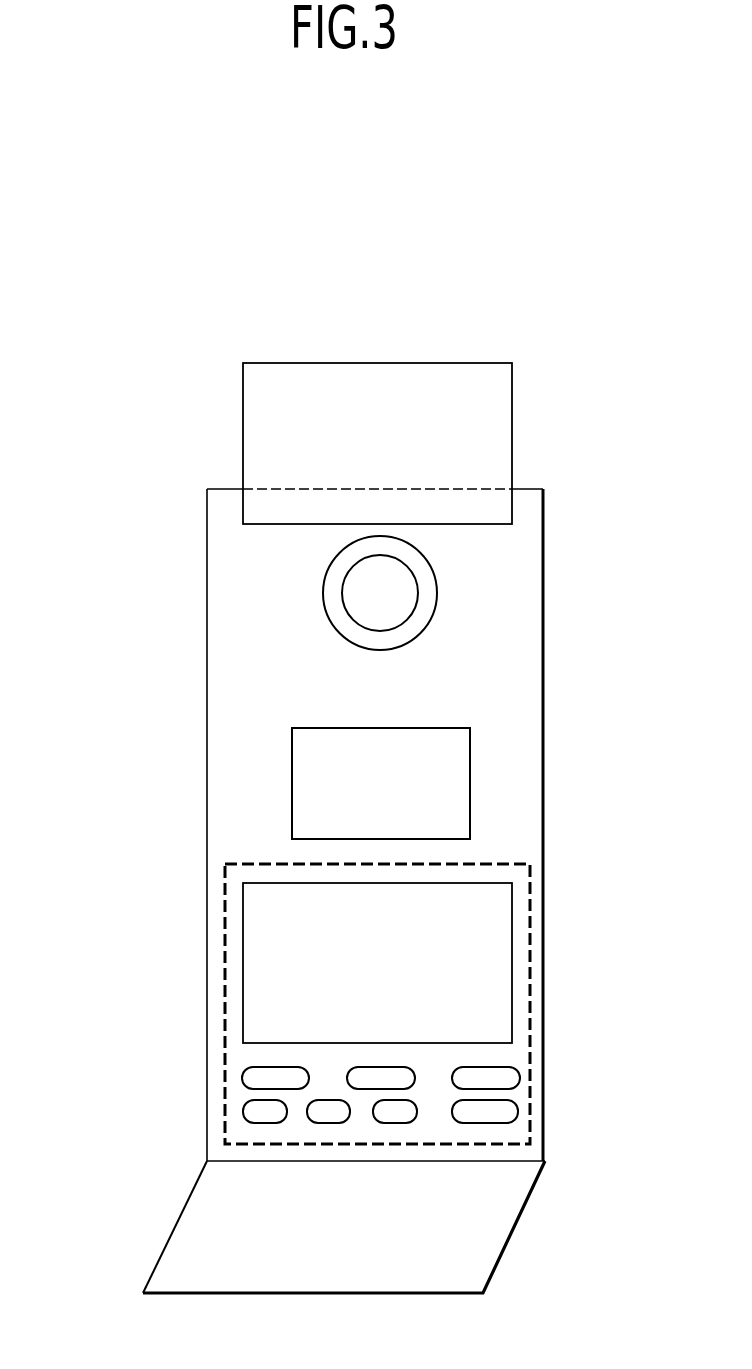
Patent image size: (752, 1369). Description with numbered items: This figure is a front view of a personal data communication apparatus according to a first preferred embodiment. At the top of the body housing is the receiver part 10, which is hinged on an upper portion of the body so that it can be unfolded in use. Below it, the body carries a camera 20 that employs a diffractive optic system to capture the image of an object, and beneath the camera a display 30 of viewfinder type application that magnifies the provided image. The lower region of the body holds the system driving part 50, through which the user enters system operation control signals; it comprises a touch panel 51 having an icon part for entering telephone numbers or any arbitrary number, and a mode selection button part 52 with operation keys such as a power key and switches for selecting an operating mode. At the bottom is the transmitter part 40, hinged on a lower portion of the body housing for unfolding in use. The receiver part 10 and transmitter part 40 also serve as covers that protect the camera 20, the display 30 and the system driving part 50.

The receiver part 10 is at (228, 433).
The camera 20 is at (306, 597).
The display 30 is at (268, 790).
The transmitter part 40 is at (170, 1220).
The system driving part 50 is at (222, 963).
The touch panel 51 is at (502, 943).
The mode selection button part 52 is at (500, 1080).